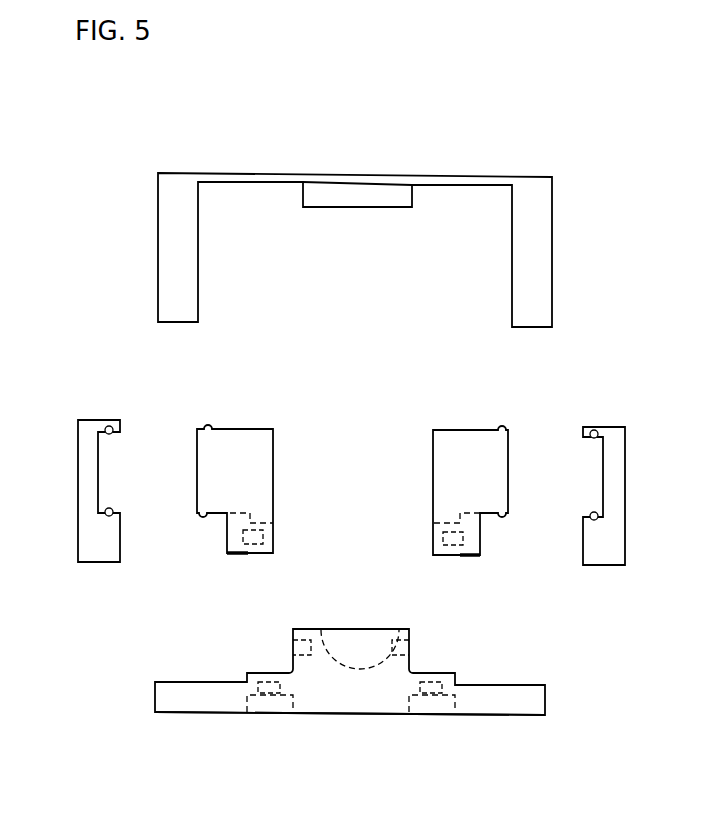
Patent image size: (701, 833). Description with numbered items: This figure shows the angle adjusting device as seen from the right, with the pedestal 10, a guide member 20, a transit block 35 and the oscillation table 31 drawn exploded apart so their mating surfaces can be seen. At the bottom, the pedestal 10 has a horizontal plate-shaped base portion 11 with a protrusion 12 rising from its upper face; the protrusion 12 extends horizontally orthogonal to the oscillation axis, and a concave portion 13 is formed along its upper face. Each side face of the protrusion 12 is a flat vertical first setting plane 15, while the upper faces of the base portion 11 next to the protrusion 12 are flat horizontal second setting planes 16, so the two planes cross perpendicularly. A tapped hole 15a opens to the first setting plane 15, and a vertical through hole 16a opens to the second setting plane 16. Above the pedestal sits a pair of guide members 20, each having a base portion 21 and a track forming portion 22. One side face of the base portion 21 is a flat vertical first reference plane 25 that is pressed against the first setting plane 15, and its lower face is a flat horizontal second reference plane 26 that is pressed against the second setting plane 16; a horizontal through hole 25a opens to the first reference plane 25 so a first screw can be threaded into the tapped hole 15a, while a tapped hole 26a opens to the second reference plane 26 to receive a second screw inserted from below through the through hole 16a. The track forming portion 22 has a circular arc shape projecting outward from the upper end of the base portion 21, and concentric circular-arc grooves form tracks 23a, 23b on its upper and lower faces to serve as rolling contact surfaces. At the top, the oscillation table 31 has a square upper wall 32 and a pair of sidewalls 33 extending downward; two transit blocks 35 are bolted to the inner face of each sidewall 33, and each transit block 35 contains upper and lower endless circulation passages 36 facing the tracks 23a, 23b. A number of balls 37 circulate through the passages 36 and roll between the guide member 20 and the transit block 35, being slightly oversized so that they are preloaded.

The pedestal 10 is at (533, 672).
The base portion 11 is at (546, 697).
The protrusion 12 is at (405, 629).
The concave portion 13 is at (332, 629).
The first setting plane 15 is at (293, 652).
The tapped hole 15a is at (303, 655).
The second setting plane 16 is at (256, 673).
The through hole 16a is at (268, 690).
The guide member 20 is at (246, 428).
The base portion 21 is at (272, 429).
The track forming portion 22 is at (197, 452).
The track 23a is at (208, 427).
The track 23b is at (207, 514).
The first reference plane 25 is at (273, 537).
The through hole 25a is at (270, 524).
The second reference plane 26 is at (262, 553).
The tapped hole 26a is at (257, 548).
The oscillation table 31 is at (393, 173).
The upper wall 32 is at (318, 172).
The sidewall 33 is at (158, 275).
The transit block 35 is at (93, 420).
The endless circulation passage 36 is at (111, 427).
The ball 37 is at (112, 434).